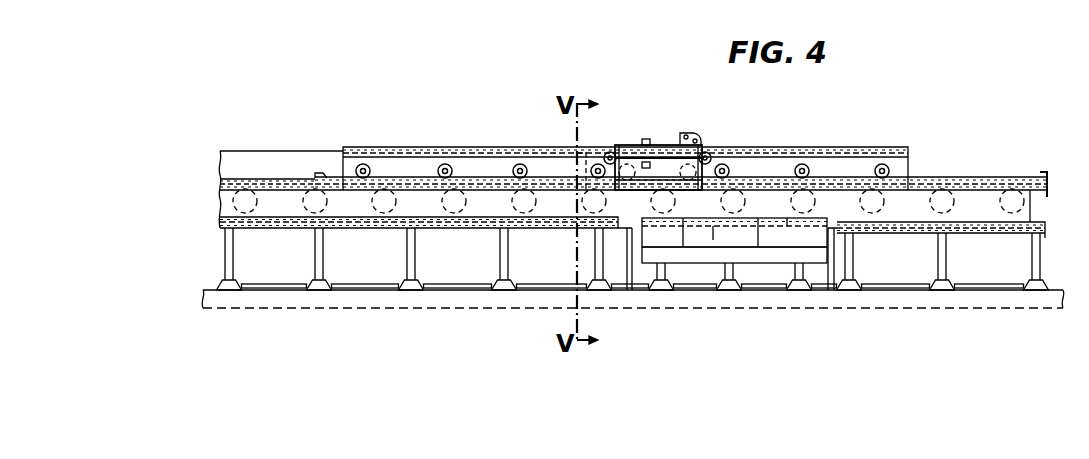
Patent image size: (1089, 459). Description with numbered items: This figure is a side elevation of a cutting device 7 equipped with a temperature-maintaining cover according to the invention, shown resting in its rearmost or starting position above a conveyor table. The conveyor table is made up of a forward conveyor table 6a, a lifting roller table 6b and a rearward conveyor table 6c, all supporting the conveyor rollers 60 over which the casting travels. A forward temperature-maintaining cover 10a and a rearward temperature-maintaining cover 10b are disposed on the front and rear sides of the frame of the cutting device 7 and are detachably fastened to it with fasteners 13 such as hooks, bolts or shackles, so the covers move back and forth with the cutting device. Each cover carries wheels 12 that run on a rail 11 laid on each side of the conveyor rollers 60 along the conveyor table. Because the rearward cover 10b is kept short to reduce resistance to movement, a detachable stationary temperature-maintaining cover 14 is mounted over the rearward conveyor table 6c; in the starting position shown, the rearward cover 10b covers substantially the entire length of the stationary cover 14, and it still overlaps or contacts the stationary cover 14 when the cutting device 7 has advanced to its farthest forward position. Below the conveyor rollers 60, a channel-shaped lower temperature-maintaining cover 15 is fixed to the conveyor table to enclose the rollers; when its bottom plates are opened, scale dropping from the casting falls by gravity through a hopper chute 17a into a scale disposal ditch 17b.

The stationary temperature-maintaining cover 14 is at (278, 151).
The wheel 12 is at (363, 164).
The rearward temperature-maintaining cover 10b is at (478, 147).
The forward temperature-maintaining cover 10a is at (870, 147).
The fasteners 13 is at (608, 154).
The cutting device 7 is at (657, 135).
The rail 11 is at (930, 177).
The lower temperature-maintaining cover 15 is at (290, 209).
The conveyor rollers 60 is at (953, 207).
The rearward conveyor table 6c is at (262, 230).
The hopper chute 17a is at (364, 266).
The scale disposal ditch 17b is at (436, 300).
The lifting roller table 6b is at (777, 263).
The forward conveyor table 6a is at (993, 235).